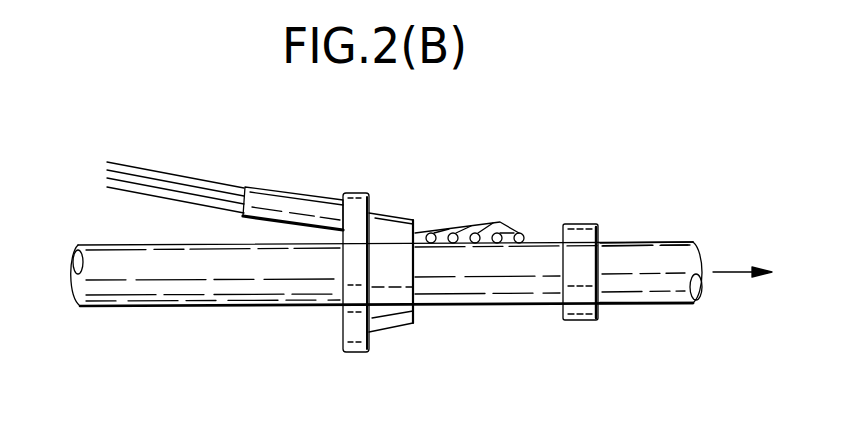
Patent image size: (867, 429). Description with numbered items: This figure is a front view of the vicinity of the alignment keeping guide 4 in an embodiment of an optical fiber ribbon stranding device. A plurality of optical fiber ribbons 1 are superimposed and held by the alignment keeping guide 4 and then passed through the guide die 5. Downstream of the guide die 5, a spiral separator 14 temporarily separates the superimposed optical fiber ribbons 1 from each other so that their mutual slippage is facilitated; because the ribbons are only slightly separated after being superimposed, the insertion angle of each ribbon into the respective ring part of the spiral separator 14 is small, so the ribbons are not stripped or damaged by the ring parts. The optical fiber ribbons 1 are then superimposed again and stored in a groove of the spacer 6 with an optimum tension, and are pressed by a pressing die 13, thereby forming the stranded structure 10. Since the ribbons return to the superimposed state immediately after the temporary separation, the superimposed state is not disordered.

The optical fiber ribbons 1 is at (165, 173).
The alignment keeping guide 4 is at (297, 205).
The guide die 5 is at (392, 237).
The spacer 6 is at (215, 307).
The stranded structure 10 is at (657, 302).
The pressing die 13 is at (585, 224).
The spiral separator 14 is at (522, 232).